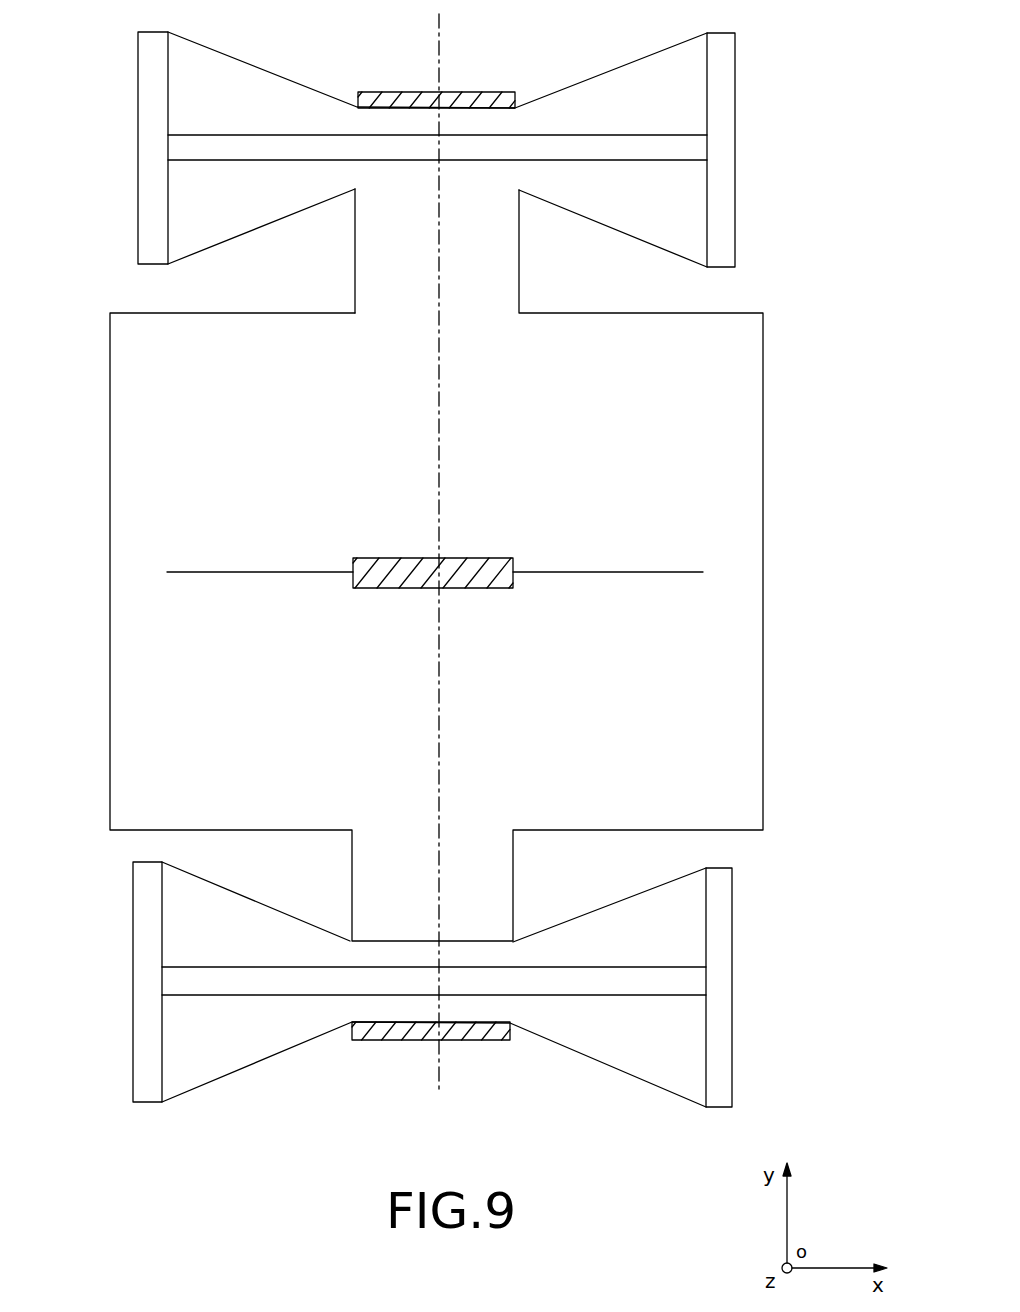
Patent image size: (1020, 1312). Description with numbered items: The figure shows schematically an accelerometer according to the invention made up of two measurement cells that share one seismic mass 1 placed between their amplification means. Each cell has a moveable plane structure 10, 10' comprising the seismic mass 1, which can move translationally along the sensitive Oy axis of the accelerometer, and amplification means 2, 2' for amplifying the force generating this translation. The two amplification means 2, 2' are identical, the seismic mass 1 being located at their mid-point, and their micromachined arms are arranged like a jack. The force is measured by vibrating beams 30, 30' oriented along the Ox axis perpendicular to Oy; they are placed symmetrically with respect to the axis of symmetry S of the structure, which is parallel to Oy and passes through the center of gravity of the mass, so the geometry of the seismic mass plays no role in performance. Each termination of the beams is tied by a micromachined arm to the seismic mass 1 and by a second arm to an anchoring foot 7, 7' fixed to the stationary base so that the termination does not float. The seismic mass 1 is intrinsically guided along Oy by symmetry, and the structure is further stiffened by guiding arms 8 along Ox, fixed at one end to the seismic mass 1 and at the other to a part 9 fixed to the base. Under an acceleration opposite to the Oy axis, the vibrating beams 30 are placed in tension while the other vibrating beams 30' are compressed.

The seismic mass 1 is at (147, 615).
The amplification means 2 is at (483, 151).
The amplification means 2' is at (481, 985).
The anchoring foot 7 is at (441, 81).
The anchoring foot 7' is at (434, 1054).
The guiding arms 8 is at (668, 576).
The part fixed to the base 9 is at (483, 581).
The moveable plane structure 10 is at (51, 430).
The moveable plane structure 10' is at (838, 715).
The vibrating beams 30 is at (146, 148).
The vibrating beams 30' is at (141, 982).
The axis of symmetry S is at (450, 552).